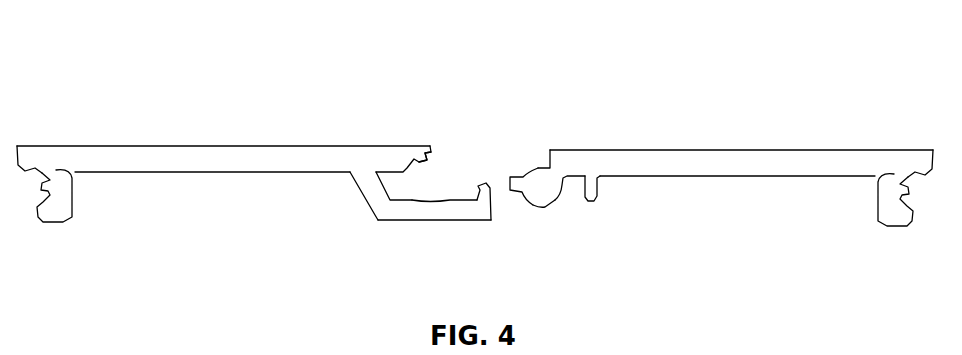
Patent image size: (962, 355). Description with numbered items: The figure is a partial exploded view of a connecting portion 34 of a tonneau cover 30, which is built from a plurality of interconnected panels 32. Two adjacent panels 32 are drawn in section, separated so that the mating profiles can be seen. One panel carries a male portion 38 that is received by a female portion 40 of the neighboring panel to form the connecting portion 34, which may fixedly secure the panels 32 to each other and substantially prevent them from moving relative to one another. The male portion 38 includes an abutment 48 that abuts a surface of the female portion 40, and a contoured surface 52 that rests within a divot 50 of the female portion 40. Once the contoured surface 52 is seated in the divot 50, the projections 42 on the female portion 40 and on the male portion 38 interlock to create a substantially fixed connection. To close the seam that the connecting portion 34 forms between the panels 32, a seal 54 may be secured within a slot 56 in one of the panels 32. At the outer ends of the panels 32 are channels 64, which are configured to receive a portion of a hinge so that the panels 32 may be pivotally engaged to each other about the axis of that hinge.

The tonneau cover 30 is at (259, 91).
The panels 32 is at (187, 165).
The connecting portion 34 is at (464, 234).
The male portion 38 is at (543, 193).
The female portion 40 is at (383, 210).
The projections 42 is at (481, 185).
The abutment 48 is at (513, 180).
The divot 50 is at (434, 200).
The contoured surface 52 is at (545, 207).
The seal 54 is at (428, 156).
The slot 56 is at (413, 156).
The channels 64 is at (42, 173).